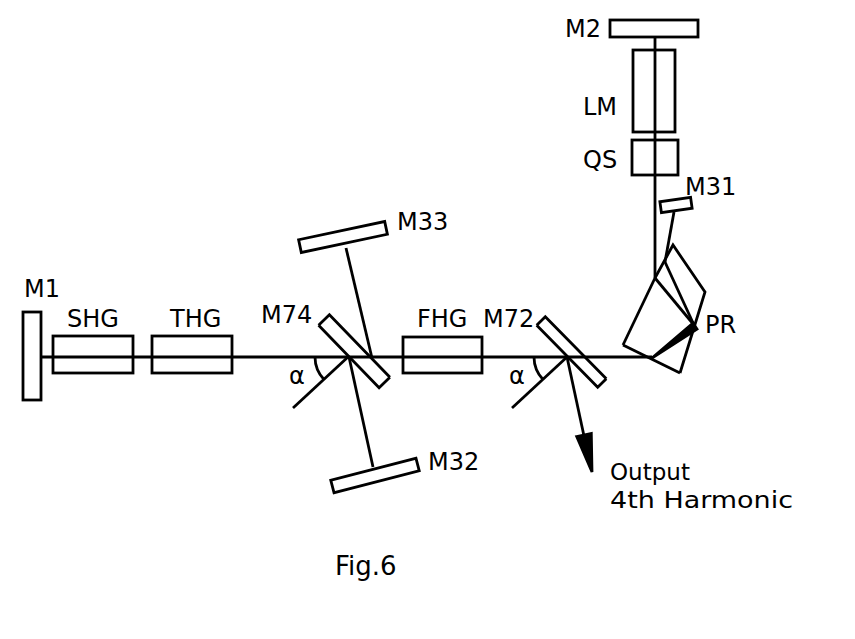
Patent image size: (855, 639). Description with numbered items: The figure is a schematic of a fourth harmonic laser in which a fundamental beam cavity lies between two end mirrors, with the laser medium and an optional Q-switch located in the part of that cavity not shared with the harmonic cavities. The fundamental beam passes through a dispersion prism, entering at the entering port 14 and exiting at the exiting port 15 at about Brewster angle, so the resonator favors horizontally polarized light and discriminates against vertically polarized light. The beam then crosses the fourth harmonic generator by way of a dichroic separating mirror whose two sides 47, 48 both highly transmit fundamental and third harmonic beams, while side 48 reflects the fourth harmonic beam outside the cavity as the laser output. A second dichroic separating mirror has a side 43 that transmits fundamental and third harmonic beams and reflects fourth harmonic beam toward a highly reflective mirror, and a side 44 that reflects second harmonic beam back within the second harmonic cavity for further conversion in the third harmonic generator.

The entering port 14 is at (658, 301).
The exiting port 15 is at (660, 352).
The side of mirror M74 43 is at (354, 340).
The side of mirror M74 44 is at (354, 365).
The side of mirror M72 47 is at (572, 342).
The side of mirror M72 48 is at (572, 365).